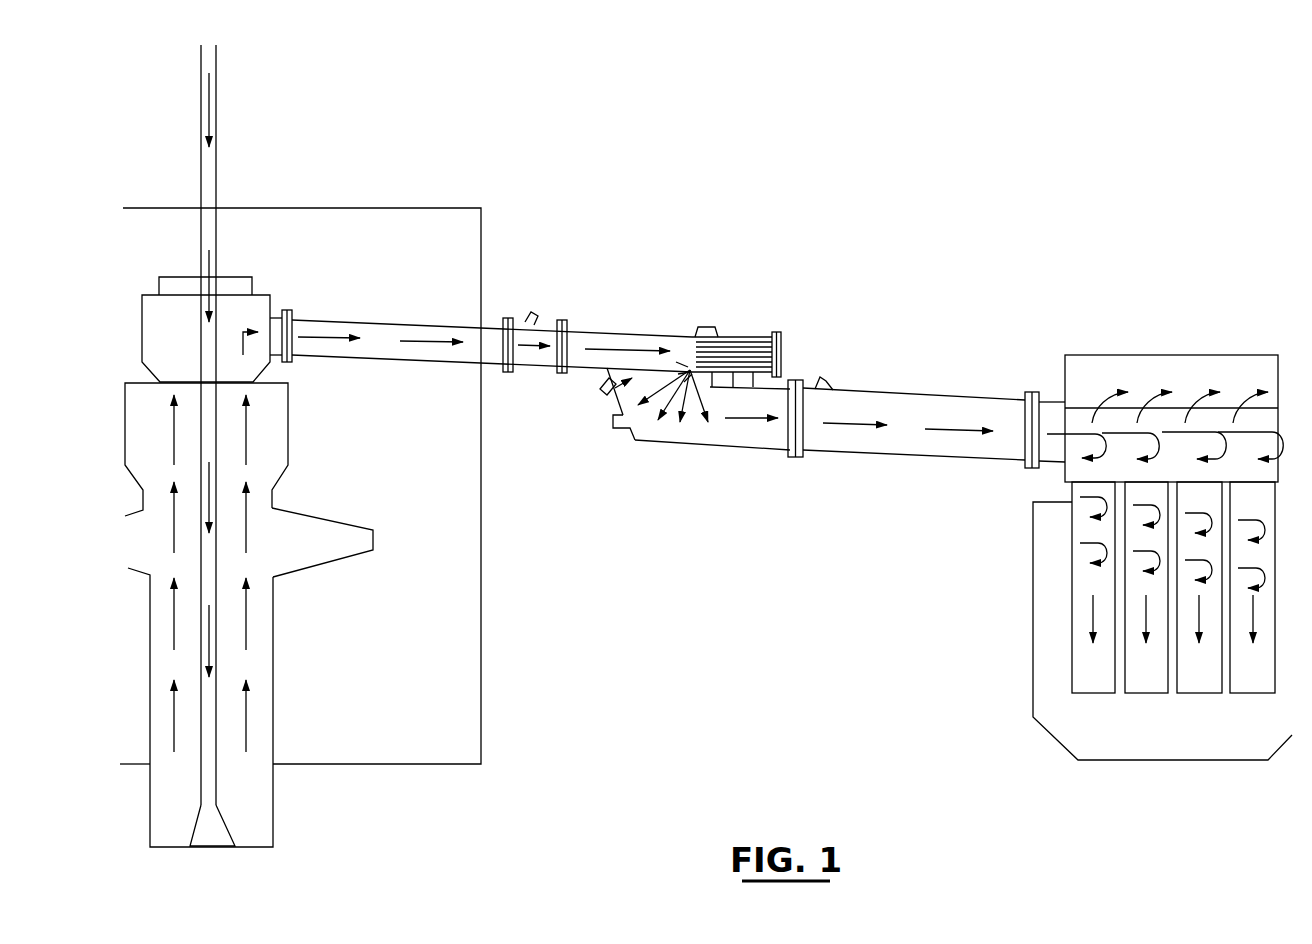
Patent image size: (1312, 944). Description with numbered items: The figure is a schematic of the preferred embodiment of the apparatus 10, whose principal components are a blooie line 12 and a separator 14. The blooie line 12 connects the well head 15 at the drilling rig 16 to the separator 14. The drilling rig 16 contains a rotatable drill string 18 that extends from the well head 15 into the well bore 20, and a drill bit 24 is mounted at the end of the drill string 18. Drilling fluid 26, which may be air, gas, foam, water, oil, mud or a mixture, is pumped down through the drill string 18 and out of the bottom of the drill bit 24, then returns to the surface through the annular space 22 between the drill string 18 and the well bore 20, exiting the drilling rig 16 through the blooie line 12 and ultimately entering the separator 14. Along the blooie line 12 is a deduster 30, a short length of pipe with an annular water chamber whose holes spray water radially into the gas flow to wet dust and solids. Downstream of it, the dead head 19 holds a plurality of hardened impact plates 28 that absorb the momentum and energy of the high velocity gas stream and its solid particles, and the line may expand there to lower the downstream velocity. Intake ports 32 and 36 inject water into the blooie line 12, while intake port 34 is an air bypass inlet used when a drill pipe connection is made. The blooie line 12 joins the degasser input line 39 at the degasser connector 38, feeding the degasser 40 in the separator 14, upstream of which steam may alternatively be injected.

The apparatus 10 is at (782, 188).
The blooie line 12 is at (717, 447).
The separator 14 is at (1122, 760).
The well head 15 is at (248, 307).
The drilling rig 16 is at (357, 192).
The drill string 18 is at (213, 175).
The dead head 19 is at (748, 330).
The well bore 20 is at (273, 822).
The annular space 22 is at (262, 750).
The drill bit 24 is at (220, 847).
The drilling fluid 26 is at (212, 567).
The impact plates 28 is at (700, 345).
The deduster 30 is at (528, 317).
The intake port 32 is at (603, 387).
The intake port 34 is at (613, 428).
The intake port 36 is at (818, 378).
The degasser connector 38 is at (1030, 467).
The degasser input line 39 is at (1050, 460).
The degasser 40 is at (1177, 355).